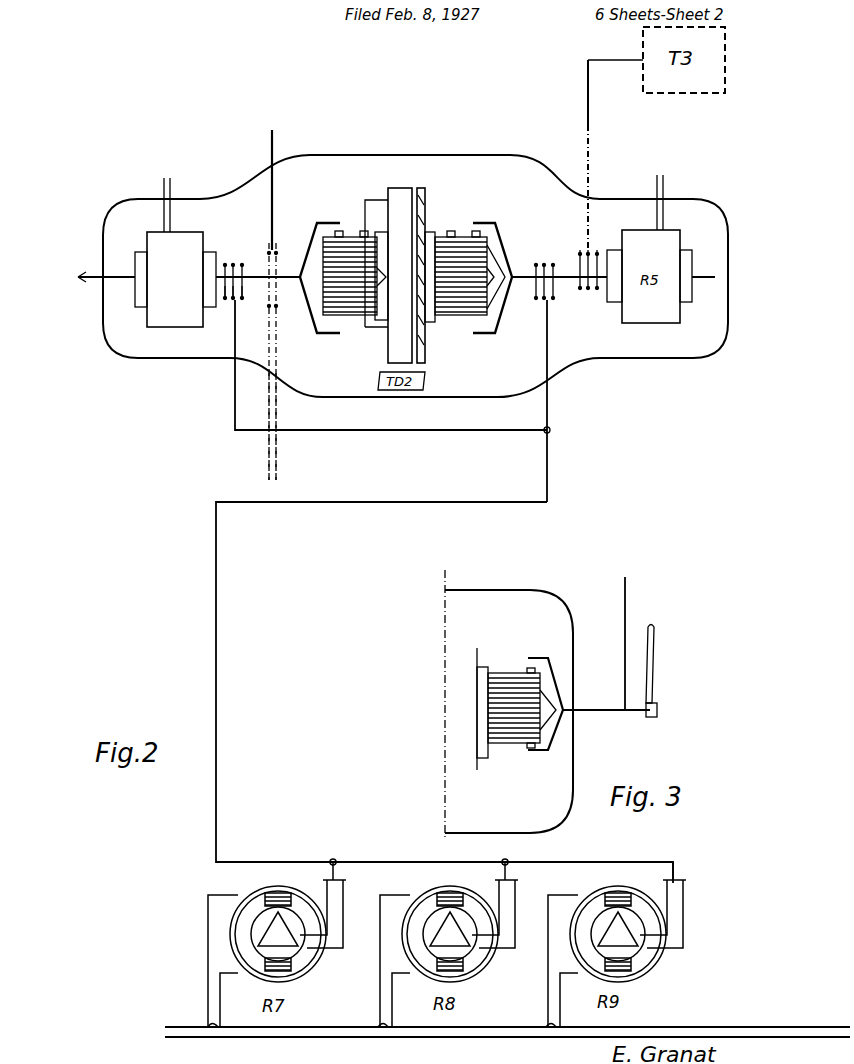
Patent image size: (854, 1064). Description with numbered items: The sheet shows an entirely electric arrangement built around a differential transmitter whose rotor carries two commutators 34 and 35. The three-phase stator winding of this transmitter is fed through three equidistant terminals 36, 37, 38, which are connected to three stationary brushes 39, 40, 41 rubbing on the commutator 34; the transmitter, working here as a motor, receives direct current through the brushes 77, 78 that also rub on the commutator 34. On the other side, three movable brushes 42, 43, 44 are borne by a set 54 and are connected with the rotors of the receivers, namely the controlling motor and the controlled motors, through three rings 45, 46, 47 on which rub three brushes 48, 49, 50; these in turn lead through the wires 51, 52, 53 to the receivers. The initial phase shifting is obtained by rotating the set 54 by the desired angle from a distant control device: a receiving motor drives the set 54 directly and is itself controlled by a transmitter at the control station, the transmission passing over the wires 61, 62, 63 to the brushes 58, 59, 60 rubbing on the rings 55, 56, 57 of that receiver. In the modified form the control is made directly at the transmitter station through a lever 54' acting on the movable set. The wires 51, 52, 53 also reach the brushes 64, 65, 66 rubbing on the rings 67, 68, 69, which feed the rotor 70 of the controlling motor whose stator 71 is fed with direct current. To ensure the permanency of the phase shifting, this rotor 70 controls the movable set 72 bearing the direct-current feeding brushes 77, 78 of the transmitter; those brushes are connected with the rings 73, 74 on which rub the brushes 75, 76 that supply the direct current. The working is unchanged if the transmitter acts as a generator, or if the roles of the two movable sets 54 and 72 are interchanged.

In FIG. 2, the commutator 34 is at (352, 318).
In FIG. 2, the commutator 35 is at (467, 298).
In FIG. 3, the commutator 35 is at (505, 742).
In FIG. 2, the terminal 36 is at (385, 215).
In FIG. 2, the terminal 37 is at (362, 364).
In FIG. 2, the terminal 38 is at (375, 330).
In FIG. 2, the stationary brush 39 is at (383, 216).
In FIG. 2, the stationary brush 40 is at (383, 216).
In FIG. 2, the stationary brush 41 is at (392, 360).
In FIG. 2, the movable brush 42 is at (476, 204).
In FIG. 3, the movable brush 42 is at (496, 643).
In FIG. 2, the movable brush 43 is at (476, 204).
In FIG. 3, the movable brush 43 is at (496, 643).
In FIG. 2, the movable brush 44 is at (485, 228).
In FIG. 3, the movable brush 44 is at (553, 658).
In FIG. 2, the ring 45 is at (518, 190).
In FIG. 2, the ring 46 is at (518, 190).
In FIG. 2, the ring 47 is at (540, 255).
In FIG. 2, the brush 48 is at (610, 362).
In FIG. 2, the brush 49 is at (610, 362).
In FIG. 2, the brush 50 is at (542, 305).
In FIG. 2, the wire 51 is at (444, 591).
In FIG. 2, the wire 52 is at (444, 591).
In FIG. 2, the wire 53 is at (549, 400).
In FIG. 2, the set of movable brushes 54 is at (593, 401).
In FIG. 3, the set of movable brushes 54 is at (606, 637).
In FIG. 3, the lever 54' is at (670, 666).
In FIG. 2, the ring 55 is at (650, 329).
In FIG. 2, the ring 56 is at (650, 329).
In FIG. 2, the ring 57 is at (598, 300).
In FIG. 2, the brush 58 is at (647, 196).
In FIG. 2, the brush 59 is at (647, 196).
In FIG. 2, the brush 60 is at (600, 250).
In FIG. 2, the wire 61 is at (566, 142).
In FIG. 2, the wire 62 is at (566, 142).
In FIG. 2, the wire 63 is at (588, 60).
In FIG. 2, the brush 64 is at (168, 391).
In FIG. 2, the brush 65 is at (168, 391).
In FIG. 2, the brush 66 is at (228, 302).
In FIG. 2, the ring 67 is at (169, 200).
In FIG. 2, the ring 68 is at (169, 200).
In FIG. 2, the ring 69 is at (233, 262).
In FIG. 2, the rotor 70 is at (208, 290).
In FIG. 2, the stator 71 is at (157, 300).
In FIG. 2, the set 72 is at (257, 278).
In FIG. 2, the ring 73 is at (248, 433).
In FIG. 2, the ring 74 is at (277, 497).
In FIG. 2, the brush 75 is at (220, 275).
In FIG. 2, the brush 76 is at (272, 255).
In FIG. 2, the brush 77 is at (330, 222).
In FIG. 2, the brush 78 is at (330, 322).